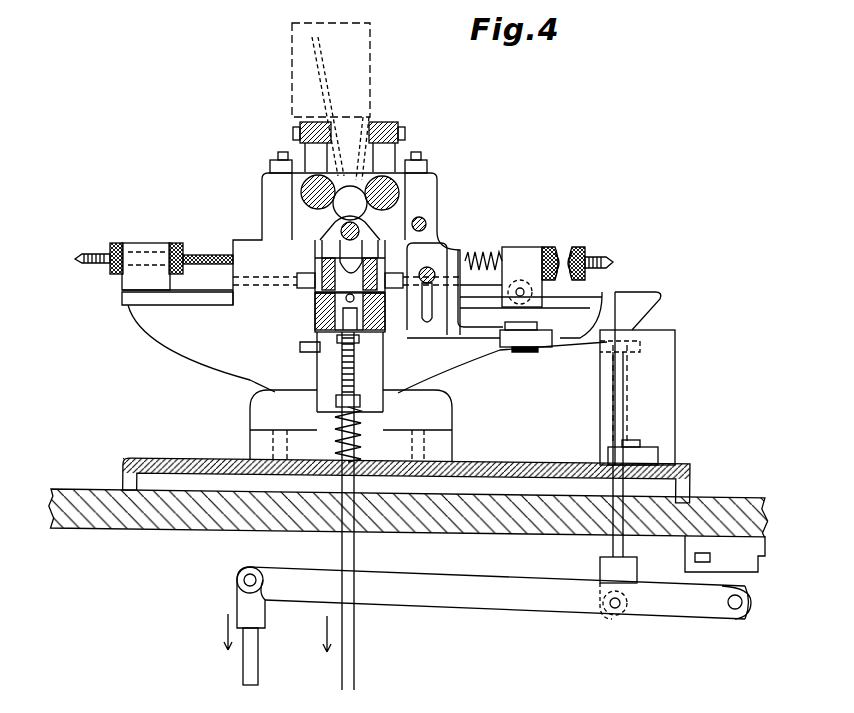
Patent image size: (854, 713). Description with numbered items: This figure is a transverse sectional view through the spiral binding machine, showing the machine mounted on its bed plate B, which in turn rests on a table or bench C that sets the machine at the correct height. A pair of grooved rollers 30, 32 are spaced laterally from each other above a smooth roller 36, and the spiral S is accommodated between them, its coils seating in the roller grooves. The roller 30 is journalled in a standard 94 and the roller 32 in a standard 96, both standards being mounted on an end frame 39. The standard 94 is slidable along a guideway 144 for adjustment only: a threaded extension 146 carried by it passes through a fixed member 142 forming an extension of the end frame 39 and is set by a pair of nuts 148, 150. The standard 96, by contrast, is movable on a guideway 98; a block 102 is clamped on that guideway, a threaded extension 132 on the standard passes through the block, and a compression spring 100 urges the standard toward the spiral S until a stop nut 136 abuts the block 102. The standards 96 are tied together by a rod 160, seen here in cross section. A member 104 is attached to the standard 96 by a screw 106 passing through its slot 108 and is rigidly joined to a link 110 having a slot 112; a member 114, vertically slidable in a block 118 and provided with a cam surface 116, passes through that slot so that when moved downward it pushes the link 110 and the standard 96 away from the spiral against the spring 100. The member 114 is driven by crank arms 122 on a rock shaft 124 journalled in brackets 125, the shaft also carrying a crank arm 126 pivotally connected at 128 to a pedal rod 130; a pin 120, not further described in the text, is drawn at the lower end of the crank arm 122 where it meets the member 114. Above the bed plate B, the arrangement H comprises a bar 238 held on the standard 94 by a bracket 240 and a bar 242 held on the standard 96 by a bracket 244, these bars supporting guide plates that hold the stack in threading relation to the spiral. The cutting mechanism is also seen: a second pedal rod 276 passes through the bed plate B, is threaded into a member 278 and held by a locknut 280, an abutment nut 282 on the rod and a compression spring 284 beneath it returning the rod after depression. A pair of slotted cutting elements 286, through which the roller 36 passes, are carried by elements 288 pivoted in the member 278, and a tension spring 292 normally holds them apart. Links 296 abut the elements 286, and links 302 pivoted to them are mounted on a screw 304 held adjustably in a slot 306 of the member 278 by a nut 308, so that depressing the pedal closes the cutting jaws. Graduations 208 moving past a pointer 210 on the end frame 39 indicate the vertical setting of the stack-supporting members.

The arrangement H is at (384, 42).
The spiral S is at (360, 186).
The bar 238 is at (300, 130).
The bar 242 is at (388, 130).
The bracket 240 is at (280, 160).
The bracket 244 is at (414, 160).
The standard 96 is at (425, 207).
The roller 30 is at (305, 186).
The roller 32 is at (396, 186).
The roller 36 is at (342, 228).
The rod 160 is at (427, 225).
The cutting element 286 is at (325, 262).
The link 296 is at (305, 270).
The element 288 is at (314, 318).
The slot 306 is at (310, 347).
The rod 276 is at (356, 548).
The compression spring 284 is at (333, 452).
The locknut 280 is at (285, 392).
The tension spring 292 is at (383, 408).
The abutment 282 is at (334, 403).
The pointer 210 is at (318, 356).
The member 278 is at (300, 344).
The graduations 208 is at (300, 350).
The end frame 39 is at (200, 341).
The member 142 is at (128, 245).
The nut 150 is at (110, 270).
The threaded extension 146 is at (148, 243).
The screw 304 is at (208, 271).
The link 302 is at (240, 255).
The standard 94 is at (262, 233).
The nut 148 is at (165, 278).
The guideway 144 is at (140, 294).
The screw 106 is at (420, 318).
The nut 308 is at (427, 268).
The slot 108 is at (447, 320).
The compression spring 100 is at (484, 256).
The block 102 is at (532, 250).
The nut 136 is at (582, 256).
The threaded extension 132 is at (616, 262).
The guideway 98 is at (494, 292).
The member 104 is at (484, 358).
The link 110 is at (542, 349).
The slot 112 is at (618, 353).
The cam surface 116 is at (652, 319).
The block 118 is at (662, 389).
The bed plate B is at (128, 462).
The table C is at (703, 498).
The crank arm 126 is at (433, 599).
The pivot 128 is at (244, 578).
The rod 130 is at (242, 654).
The member 114 is at (610, 556).
The bracket 125 is at (712, 551).
The pivot pin 120 is at (607, 613).
The crank arm 122 is at (630, 622).
The rock shaft 124 is at (733, 611).